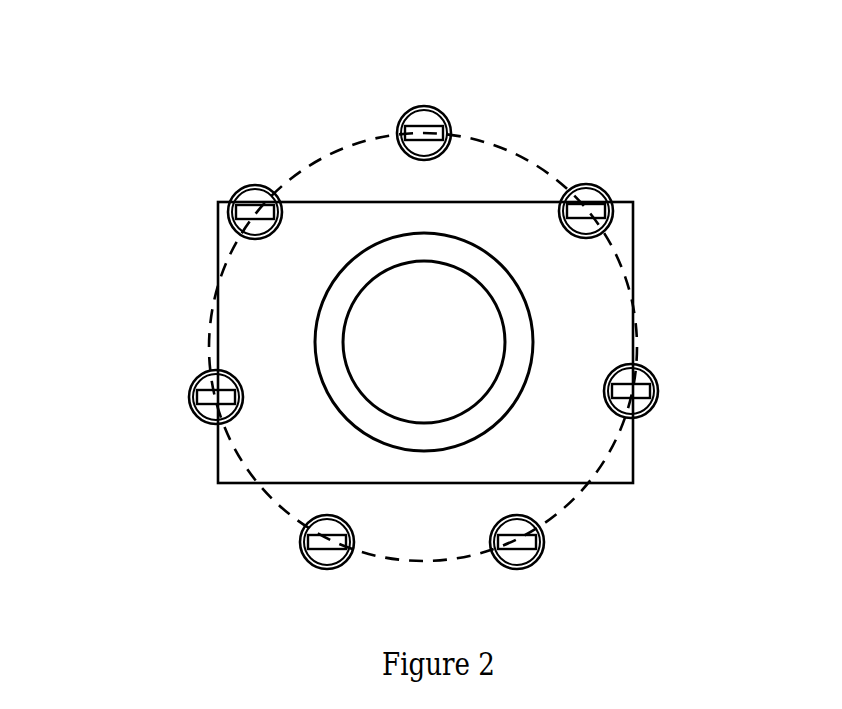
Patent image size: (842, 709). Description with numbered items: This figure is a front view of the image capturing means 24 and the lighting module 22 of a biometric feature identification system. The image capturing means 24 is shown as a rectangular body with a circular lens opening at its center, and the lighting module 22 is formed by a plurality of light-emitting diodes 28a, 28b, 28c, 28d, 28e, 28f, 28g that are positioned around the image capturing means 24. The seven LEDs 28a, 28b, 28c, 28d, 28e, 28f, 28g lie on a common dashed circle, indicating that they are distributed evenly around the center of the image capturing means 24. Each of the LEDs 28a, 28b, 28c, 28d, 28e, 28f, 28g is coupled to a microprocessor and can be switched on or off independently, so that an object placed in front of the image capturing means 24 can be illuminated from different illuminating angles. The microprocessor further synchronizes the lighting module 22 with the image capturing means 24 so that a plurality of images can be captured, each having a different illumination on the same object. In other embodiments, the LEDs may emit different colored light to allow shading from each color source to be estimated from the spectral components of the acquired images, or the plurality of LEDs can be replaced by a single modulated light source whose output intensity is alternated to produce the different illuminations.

The lighting module 22 is at (328, 150).
The image capturing means 24 is at (634, 485).
The light-emitting diode 28a is at (437, 110).
The light-emitting diode 28b is at (600, 185).
The light-emitting diode 28c is at (645, 365).
The light-emitting diode 28d is at (515, 568).
The light-emitting diode 28e is at (305, 560).
The light-emitting diode 28f is at (200, 372).
The light-emitting diode 28g is at (237, 190).